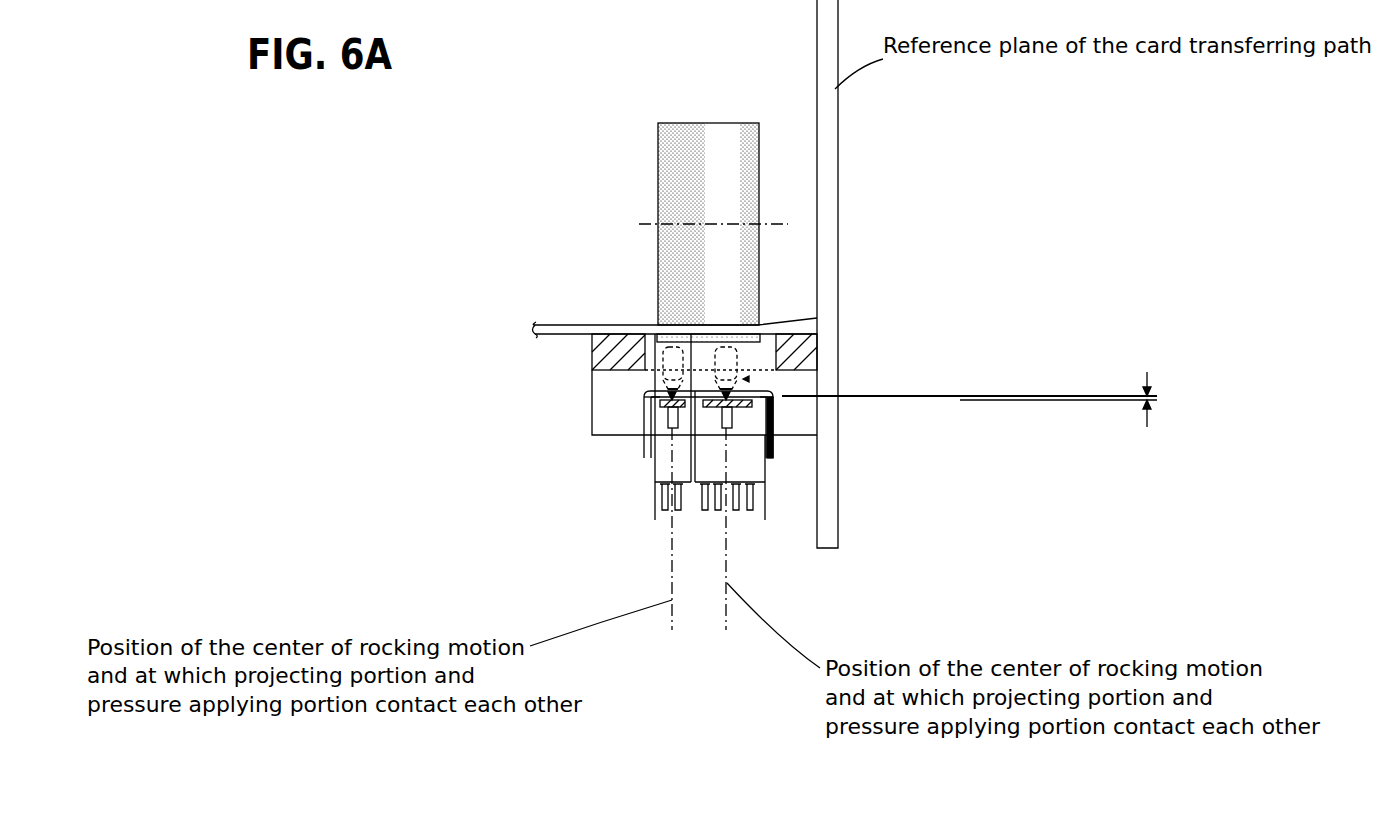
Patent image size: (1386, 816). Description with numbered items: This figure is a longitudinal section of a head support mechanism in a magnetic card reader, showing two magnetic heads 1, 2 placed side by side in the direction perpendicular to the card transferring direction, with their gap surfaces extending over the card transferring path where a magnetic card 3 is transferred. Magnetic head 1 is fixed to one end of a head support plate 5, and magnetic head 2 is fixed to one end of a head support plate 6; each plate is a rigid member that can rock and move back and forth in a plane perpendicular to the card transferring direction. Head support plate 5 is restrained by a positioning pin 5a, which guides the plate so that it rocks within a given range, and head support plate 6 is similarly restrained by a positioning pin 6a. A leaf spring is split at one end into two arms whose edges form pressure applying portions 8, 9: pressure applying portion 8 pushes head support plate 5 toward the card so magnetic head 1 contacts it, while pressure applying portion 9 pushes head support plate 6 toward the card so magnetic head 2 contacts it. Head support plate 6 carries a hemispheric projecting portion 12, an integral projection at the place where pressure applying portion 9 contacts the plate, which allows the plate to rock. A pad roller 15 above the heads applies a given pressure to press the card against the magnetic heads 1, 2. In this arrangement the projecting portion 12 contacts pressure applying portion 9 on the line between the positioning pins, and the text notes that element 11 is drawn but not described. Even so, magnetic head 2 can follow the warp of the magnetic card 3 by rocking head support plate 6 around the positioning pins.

The magnetic head 1 is at (657, 348).
The magnetic head 2 is at (758, 355).
The magnetic card 3 is at (569, 326).
The head support plate 5 is at (778, 424).
The head support plate 6 is at (771, 399).
The positioning pin 5a is at (661, 377).
The positioning pin 6a is at (745, 379).
The pressure applying portion 8 is at (655, 403).
The pressure applying portion 9 is at (742, 405).
The left rocking member 11 is at (657, 401).
The projecting portion 12 is at (774, 402).
The pad roller 15 is at (728, 127).